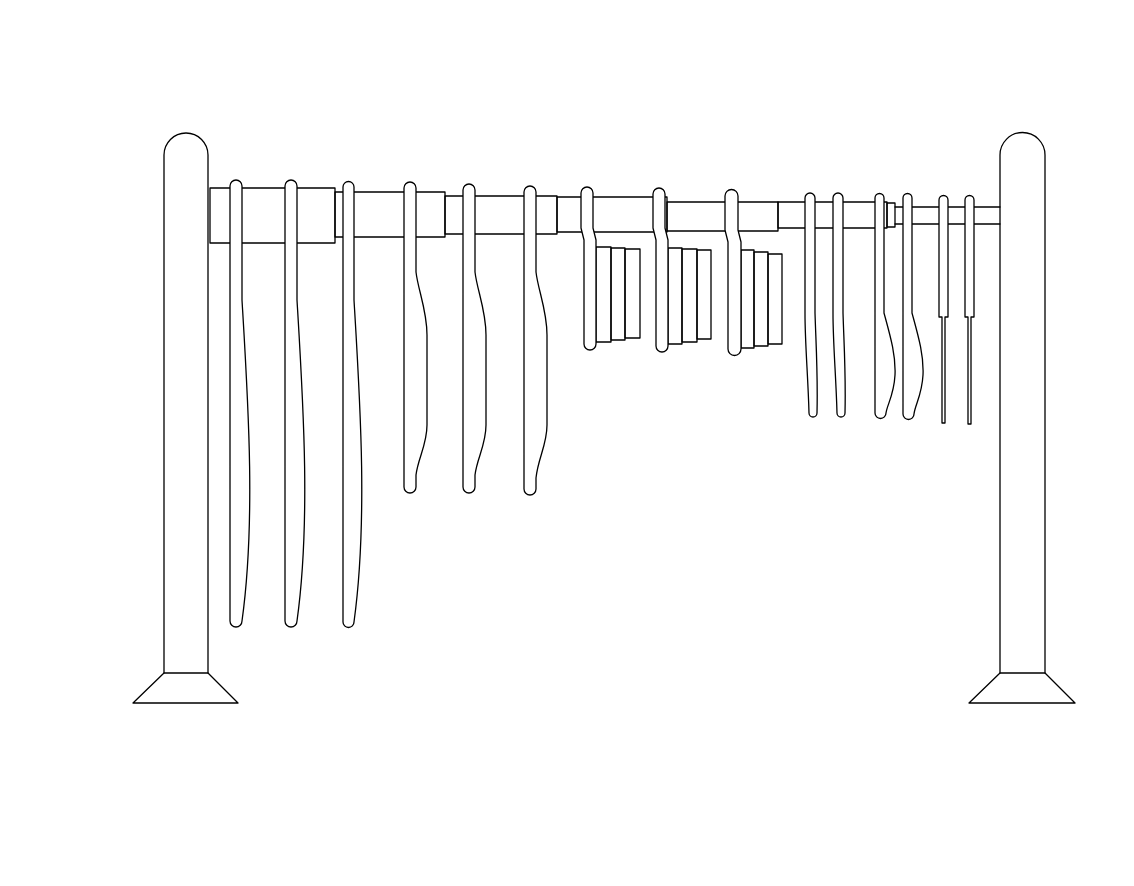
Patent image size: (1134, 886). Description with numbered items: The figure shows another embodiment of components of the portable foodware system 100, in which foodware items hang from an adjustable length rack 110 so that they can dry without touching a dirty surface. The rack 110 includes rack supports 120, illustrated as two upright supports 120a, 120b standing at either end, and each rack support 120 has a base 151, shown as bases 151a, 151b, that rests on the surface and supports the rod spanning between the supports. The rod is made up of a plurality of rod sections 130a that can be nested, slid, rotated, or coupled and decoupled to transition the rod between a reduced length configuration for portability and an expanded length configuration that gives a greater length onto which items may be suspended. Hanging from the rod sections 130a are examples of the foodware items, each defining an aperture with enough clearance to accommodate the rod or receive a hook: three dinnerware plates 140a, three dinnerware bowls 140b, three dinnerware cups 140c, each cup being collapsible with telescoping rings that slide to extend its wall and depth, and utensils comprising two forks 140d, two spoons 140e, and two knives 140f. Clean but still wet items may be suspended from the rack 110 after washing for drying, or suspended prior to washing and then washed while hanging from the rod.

The portable foodware system 100 is at (1006, 58).
The adjustable length rack 110 is at (163, 118).
The rack support 120 is at (178, 316).
The support 120a is at (163, 435).
The support 120b is at (1046, 433).
The rod section 130a is at (268, 188).
The dinnerware plate 140a is at (237, 628).
The dinnerware bowl 140b is at (410, 494).
The dinnerware cup 140c is at (588, 351).
The fork 140d is at (810, 418).
The spoon 140e is at (879, 196).
The knife 140f is at (944, 425).
The base 151 is at (155, 686).
The base 151a is at (188, 694).
The base 151b is at (1024, 694).